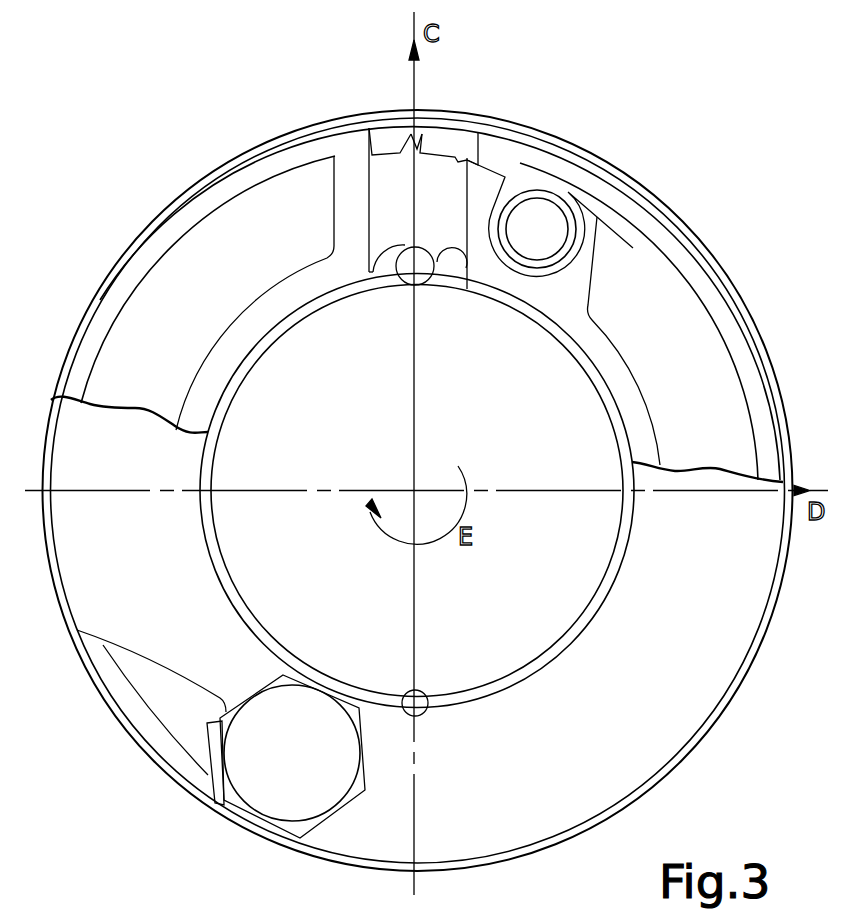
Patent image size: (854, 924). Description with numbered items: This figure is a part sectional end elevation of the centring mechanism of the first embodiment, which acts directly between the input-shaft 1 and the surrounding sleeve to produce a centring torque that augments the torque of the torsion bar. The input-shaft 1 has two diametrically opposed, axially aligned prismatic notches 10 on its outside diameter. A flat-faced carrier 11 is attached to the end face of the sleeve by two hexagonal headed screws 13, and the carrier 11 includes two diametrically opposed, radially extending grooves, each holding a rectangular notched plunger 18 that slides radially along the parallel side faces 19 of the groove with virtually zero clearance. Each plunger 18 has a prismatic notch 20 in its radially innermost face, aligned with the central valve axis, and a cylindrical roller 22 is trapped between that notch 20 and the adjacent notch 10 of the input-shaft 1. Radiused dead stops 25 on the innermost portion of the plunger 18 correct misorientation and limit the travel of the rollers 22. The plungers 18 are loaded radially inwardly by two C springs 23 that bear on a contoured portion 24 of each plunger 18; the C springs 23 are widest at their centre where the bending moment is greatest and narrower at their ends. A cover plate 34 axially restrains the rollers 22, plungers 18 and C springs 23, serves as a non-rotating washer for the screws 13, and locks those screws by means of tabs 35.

The input-shaft 1 is at (248, 385).
The prismatic notches 10 is at (406, 287).
The carrier 11 is at (638, 395).
The hexagonal headed screws 13 is at (293, 795).
The notched plunger 18 is at (378, 185).
The side faces 19 is at (368, 208).
The prismatic notches 20 is at (424, 248).
The cylindrical rollers 22 is at (424, 265).
The C springs 23 is at (98, 312).
The contoured portion 24 is at (391, 150).
The radiused dead stops 25 is at (635, 197).
The cover plate 34 is at (705, 668).
The tabs 35 is at (207, 783).